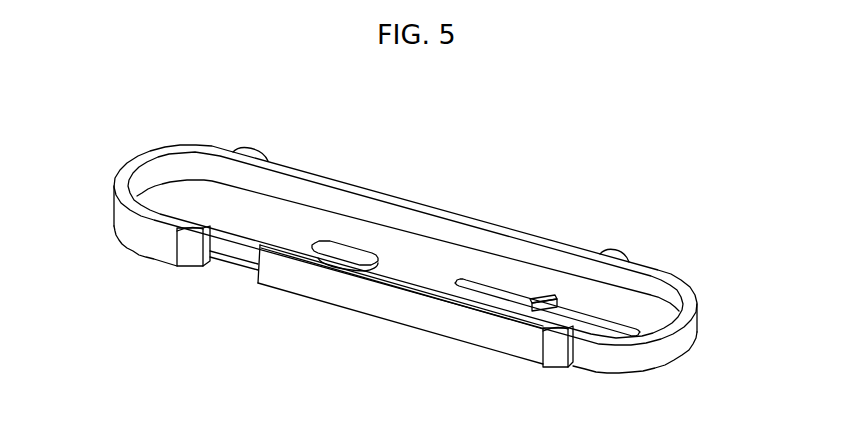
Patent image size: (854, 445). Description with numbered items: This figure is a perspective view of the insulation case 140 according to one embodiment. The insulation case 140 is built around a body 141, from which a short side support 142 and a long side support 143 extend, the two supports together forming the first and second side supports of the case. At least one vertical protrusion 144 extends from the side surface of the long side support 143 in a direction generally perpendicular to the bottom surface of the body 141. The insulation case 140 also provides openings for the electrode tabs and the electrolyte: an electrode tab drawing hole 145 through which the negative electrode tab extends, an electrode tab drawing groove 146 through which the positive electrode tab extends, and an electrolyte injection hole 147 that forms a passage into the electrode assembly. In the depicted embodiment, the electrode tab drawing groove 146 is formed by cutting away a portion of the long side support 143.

The insulation case 140 is at (420, 270).
The body 141 is at (423, 250).
The short side support 142 is at (140, 172).
The long side support 143 is at (423, 250).
The vertical protrusion 144 is at (190, 264).
The electrode tab drawing hole 145 is at (551, 314).
The electrode tab drawing groove 146 is at (238, 265).
The electrolyte injection hole 147 is at (346, 253).